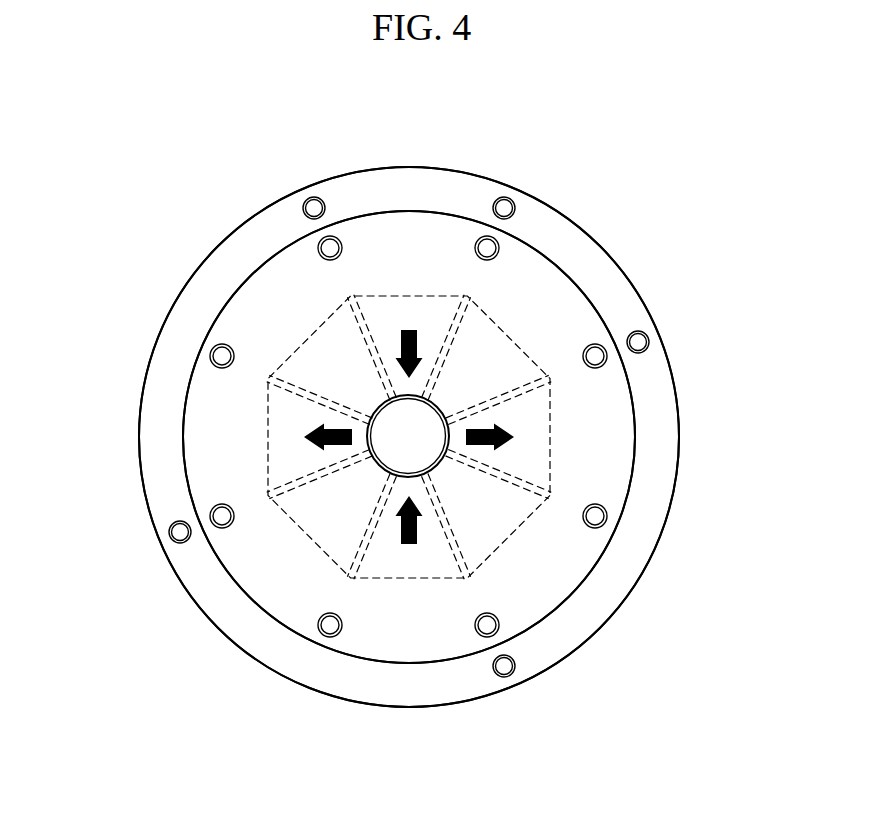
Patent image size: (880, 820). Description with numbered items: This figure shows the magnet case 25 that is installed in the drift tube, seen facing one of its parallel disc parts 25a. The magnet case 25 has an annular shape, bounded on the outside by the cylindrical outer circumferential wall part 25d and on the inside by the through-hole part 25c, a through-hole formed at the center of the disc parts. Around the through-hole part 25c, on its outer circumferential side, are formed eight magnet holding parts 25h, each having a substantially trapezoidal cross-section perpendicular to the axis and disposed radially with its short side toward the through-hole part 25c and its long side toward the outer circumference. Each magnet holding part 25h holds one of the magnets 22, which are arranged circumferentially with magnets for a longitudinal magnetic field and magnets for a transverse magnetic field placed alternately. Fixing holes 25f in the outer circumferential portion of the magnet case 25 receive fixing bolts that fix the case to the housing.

The magnet 22 is at (417, 303).
The magnet case 25 is at (537, 197).
The disc part 25a is at (580, 323).
The through-hole part 25c is at (388, 462).
The outer circumferential wall part 25d is at (660, 533).
The fixing hole 25f is at (641, 341).
The magnet holding part 25h is at (372, 293).